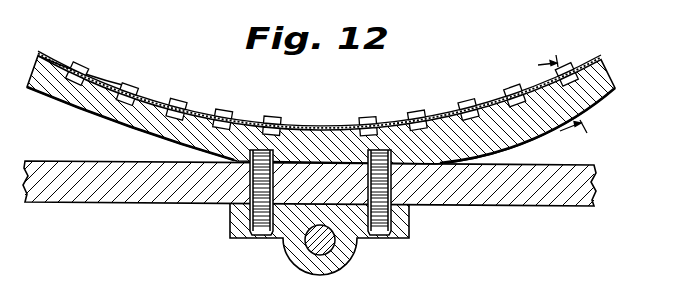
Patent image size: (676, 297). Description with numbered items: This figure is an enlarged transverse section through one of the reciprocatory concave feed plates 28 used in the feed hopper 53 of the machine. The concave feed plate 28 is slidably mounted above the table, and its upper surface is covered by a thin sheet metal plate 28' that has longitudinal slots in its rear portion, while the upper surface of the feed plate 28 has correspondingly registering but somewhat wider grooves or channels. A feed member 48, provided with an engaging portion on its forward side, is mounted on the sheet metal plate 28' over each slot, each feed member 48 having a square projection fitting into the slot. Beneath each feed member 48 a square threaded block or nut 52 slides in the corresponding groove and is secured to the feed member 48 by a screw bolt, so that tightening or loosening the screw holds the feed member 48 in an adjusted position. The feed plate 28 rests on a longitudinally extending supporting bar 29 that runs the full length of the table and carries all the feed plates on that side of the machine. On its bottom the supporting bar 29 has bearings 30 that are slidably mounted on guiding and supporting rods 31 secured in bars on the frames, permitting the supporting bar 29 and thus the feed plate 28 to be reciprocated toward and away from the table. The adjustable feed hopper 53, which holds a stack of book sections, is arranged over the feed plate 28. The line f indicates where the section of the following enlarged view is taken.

The reciprocatory concave feed plate 28 is at (317, 107).
The thin sheet metal plate 28' is at (84, 57).
The supporting bar 29 is at (118, 194).
The bearing 30 is at (410, 228).
The guiding and supporting rod 31 is at (356, 253).
The feed member 48 is at (121, 87).
The square threaded block or nut 52 is at (572, 90).
The adjustable feed hopper 53 is at (327, 122).
The section line f— f is at (562, 93).